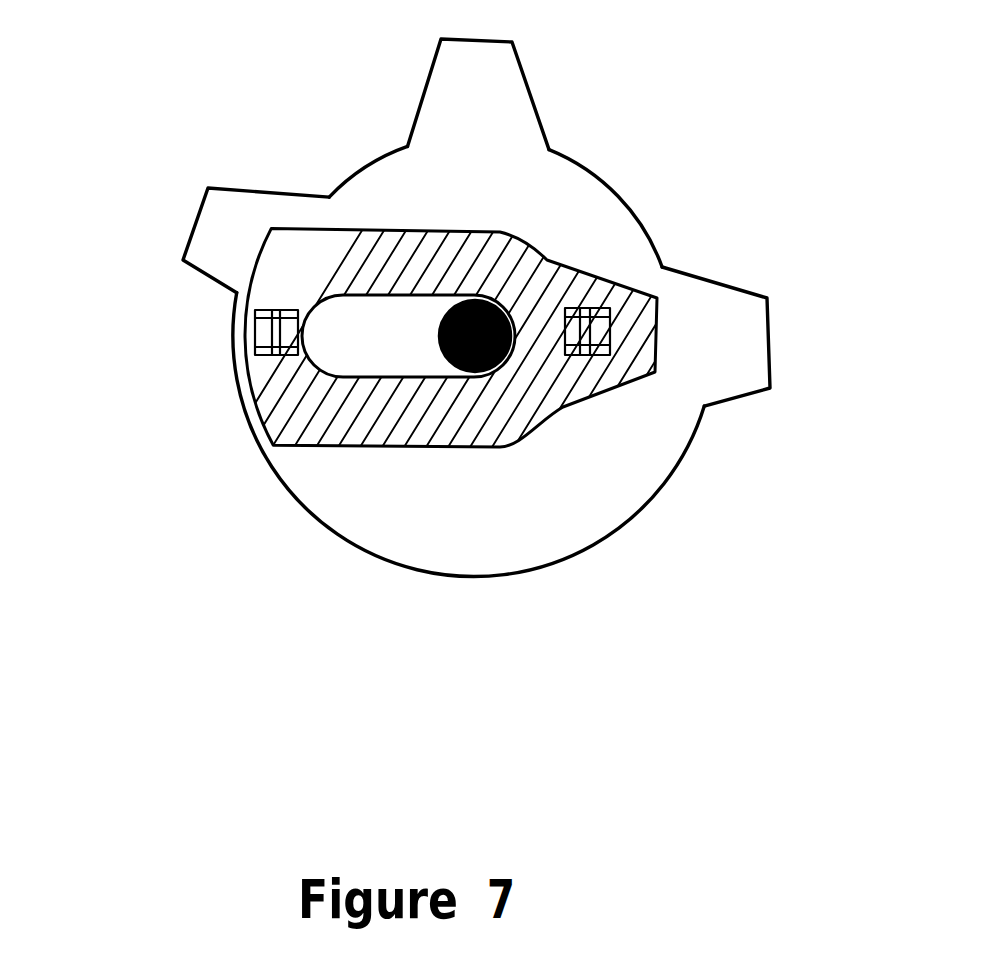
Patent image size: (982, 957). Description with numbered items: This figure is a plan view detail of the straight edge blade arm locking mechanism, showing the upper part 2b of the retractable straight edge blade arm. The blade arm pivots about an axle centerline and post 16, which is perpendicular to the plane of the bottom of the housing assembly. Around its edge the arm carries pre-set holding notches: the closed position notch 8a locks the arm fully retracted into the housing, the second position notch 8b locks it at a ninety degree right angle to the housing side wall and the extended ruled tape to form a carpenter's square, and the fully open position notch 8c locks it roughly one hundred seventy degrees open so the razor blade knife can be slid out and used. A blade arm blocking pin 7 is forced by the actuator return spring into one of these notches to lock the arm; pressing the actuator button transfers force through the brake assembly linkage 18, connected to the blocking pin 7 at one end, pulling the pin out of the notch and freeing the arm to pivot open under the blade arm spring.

The upper part of the straight edge blade arm 2b is at (624, 530).
The blade arm blocking pin 7 is at (345, 450).
The closed position notch 8a is at (755, 385).
The second position notch 8b is at (527, 68).
The fully open position notch 8c is at (229, 173).
The axle centerline and post 16 is at (440, 353).
The brake assembly linkage 18 is at (252, 328).